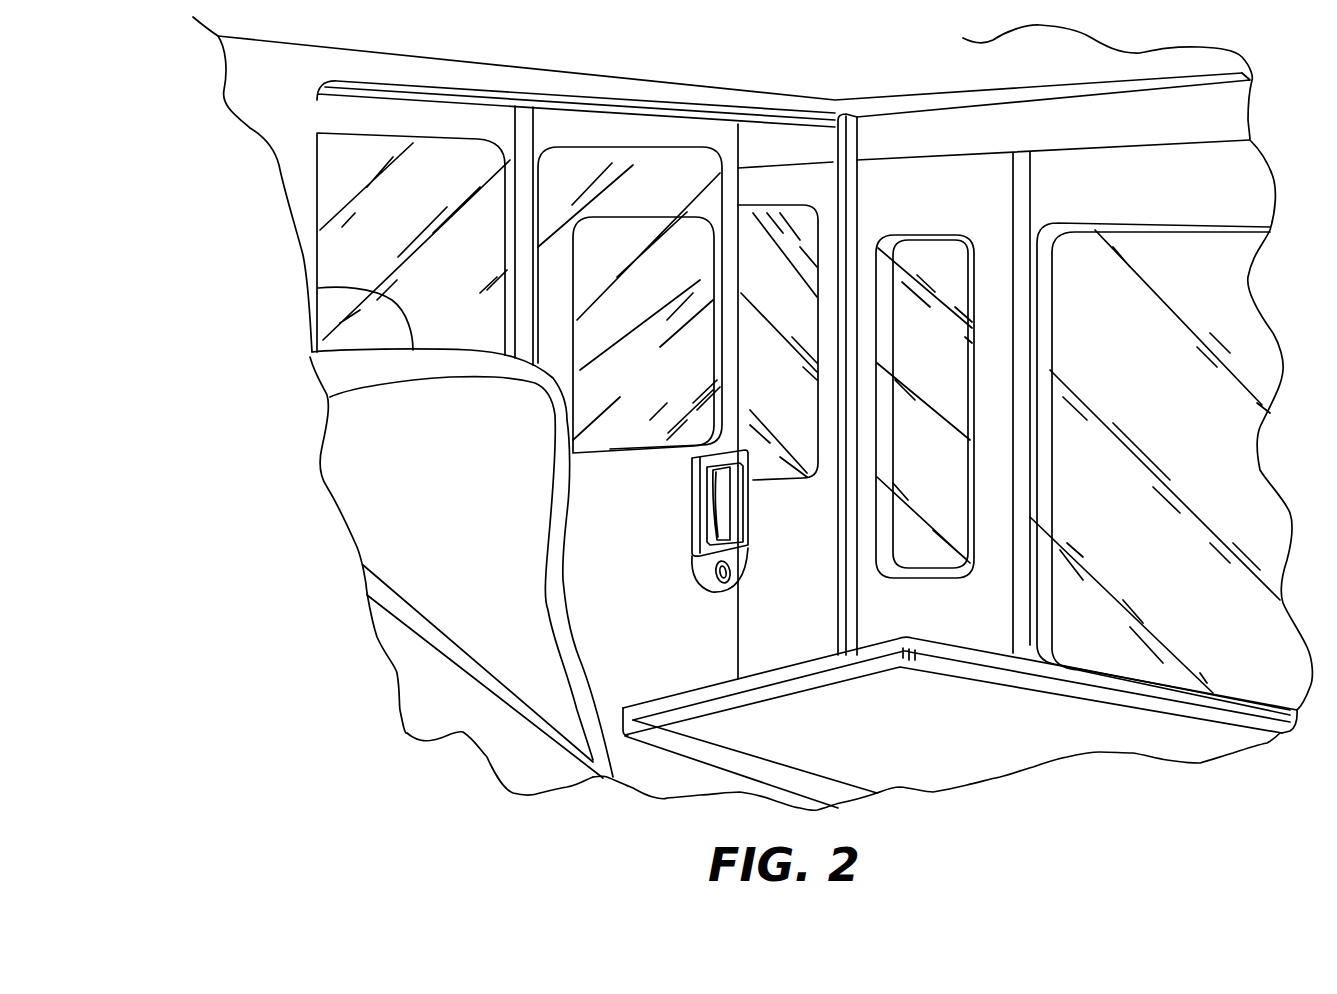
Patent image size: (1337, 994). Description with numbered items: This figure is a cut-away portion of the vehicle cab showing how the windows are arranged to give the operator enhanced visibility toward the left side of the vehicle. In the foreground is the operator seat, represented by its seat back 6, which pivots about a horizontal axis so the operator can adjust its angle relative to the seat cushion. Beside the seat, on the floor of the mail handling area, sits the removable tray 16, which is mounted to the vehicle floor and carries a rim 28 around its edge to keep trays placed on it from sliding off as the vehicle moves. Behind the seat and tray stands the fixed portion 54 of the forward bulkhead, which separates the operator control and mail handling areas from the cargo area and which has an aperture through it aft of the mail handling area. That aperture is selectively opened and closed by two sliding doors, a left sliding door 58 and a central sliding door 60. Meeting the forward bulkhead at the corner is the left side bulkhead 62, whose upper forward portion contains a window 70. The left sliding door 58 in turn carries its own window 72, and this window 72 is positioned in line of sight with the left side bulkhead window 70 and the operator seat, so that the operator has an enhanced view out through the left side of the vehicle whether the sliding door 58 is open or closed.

The seat back 6 is at (441, 514).
The tray 16 is at (962, 737).
The rim 28 is at (763, 753).
The fixed portion 54 is at (256, 111).
The left sliding door 58 is at (727, 653).
The central sliding door 60 is at (505, 122).
The left side bulkhead 62 is at (775, 552).
The window 70 is at (758, 382).
The window 72 is at (650, 427).